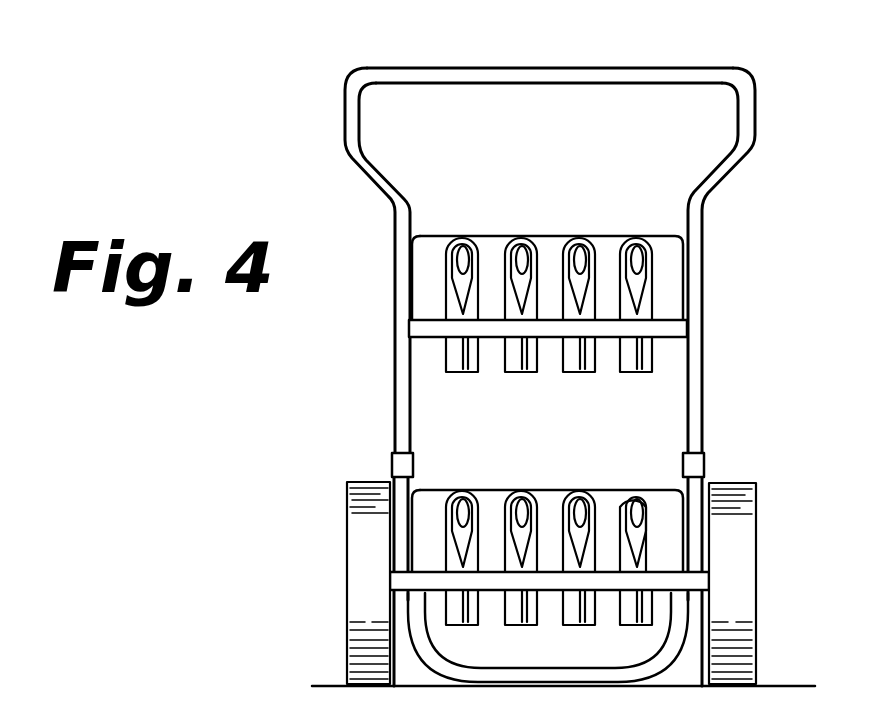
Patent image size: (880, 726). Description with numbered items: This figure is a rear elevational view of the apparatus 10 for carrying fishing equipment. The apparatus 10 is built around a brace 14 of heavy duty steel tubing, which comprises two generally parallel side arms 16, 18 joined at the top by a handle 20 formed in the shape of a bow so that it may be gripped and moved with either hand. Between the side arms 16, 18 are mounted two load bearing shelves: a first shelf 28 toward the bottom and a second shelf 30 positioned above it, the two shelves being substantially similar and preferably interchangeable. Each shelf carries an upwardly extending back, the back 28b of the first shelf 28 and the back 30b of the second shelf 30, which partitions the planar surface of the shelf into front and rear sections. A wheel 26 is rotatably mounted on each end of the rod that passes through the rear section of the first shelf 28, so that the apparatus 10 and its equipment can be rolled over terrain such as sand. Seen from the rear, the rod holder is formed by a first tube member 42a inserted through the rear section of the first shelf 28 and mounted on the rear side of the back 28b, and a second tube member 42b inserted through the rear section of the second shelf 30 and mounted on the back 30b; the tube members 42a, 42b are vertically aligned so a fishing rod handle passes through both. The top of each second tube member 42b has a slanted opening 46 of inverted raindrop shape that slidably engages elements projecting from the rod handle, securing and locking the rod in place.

The apparatus 10 is at (306, 188).
The brace 14 is at (760, 123).
The side arm 16 is at (702, 262).
The side arm 18 is at (394, 240).
The handle 20 is at (624, 78).
The wheel 26 is at (745, 537).
The first shelf 28 is at (597, 490).
The back of first shelf 28b is at (425, 516).
The second shelf 30 is at (553, 236).
The back of second shelf 30b is at (427, 290).
The first tube member 42a is at (460, 626).
The second tube member 42b is at (519, 373).
The slanted opening 46 is at (465, 237).